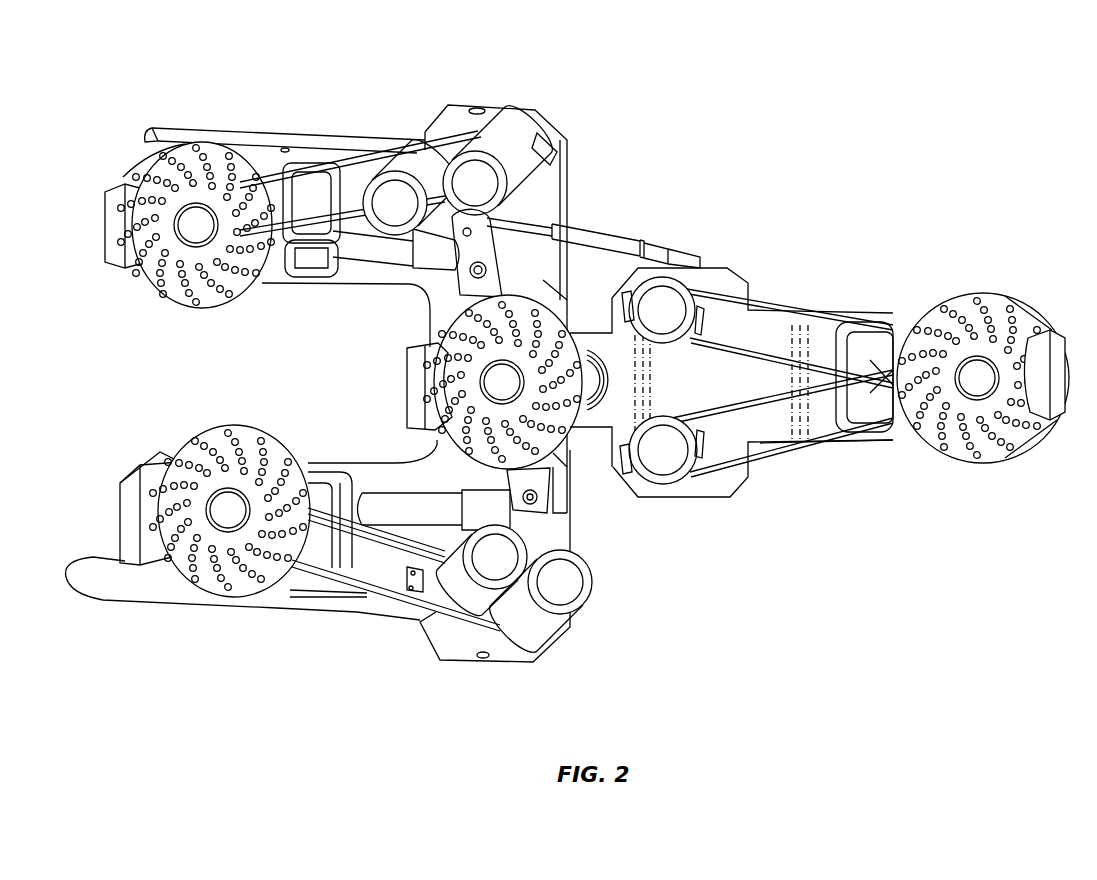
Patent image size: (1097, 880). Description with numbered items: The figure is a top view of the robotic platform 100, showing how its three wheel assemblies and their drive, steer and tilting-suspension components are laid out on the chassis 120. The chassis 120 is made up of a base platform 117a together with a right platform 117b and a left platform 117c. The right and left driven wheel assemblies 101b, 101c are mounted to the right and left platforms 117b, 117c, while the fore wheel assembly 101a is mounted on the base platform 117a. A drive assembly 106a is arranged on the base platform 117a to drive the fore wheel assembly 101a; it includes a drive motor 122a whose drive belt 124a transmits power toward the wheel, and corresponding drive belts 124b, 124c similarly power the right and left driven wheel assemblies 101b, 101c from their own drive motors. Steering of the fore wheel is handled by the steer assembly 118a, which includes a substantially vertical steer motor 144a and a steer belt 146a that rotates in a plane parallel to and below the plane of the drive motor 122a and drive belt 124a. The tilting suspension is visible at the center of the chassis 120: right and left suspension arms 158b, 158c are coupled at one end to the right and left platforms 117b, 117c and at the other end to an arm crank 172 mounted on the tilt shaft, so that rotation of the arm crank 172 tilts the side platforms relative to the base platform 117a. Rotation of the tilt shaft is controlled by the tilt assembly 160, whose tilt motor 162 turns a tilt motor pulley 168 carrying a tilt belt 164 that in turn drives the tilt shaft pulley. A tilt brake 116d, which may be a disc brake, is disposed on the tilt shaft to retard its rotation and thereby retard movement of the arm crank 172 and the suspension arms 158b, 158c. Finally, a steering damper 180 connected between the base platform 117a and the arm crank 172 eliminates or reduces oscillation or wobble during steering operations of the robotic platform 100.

The robotic platform 100 is at (1000, 92).
The fore wheel assembly 101a is at (1066, 324).
The right driven wheel assembly 101b is at (186, 126).
The left driven wheel assembly 101c is at (123, 611).
The drive assembly 106a is at (807, 450).
The tilt brake 116d is at (560, 455).
The base platform 117a is at (735, 300).
The right platform 117b is at (257, 163).
The left platform 117c is at (297, 592).
The steer assembly 118a is at (833, 306).
The chassis 120 is at (565, 119).
The drive motor 122a is at (673, 472).
The drive belt 124a is at (783, 455).
The drive belt 124b is at (350, 160).
The drive belt 124c is at (367, 605).
The steer motor 144a is at (662, 310).
The steer belt 146a is at (782, 310).
The right suspension arm 158b is at (390, 250).
The left suspension arm 158c is at (407, 507).
The tilt assembly 160 is at (548, 277).
The tilt motor 162 is at (618, 358).
The tilt belt 164 is at (620, 372).
The tilt motor pulley 168 is at (620, 400).
The arm crank 172 is at (483, 287).
The steering damper 180 is at (593, 237).